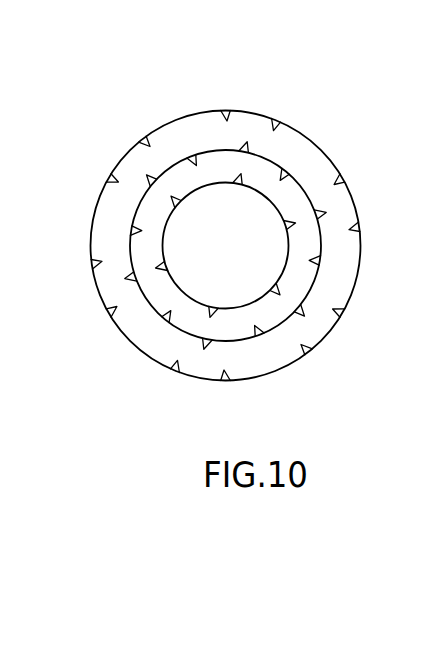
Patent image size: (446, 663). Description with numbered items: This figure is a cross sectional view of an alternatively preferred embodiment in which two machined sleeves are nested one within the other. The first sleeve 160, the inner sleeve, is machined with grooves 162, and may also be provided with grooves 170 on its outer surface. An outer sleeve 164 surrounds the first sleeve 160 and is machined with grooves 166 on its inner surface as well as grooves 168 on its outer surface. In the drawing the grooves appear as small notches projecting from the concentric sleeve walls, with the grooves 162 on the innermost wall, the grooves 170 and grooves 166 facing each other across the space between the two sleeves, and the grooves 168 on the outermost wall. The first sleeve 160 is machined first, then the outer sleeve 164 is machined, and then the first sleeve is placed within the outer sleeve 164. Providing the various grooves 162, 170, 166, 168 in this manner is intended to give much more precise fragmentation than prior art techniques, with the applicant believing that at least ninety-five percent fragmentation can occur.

The first sleeve 160 is at (292, 200).
The grooves 162 is at (278, 290).
The outer sleeve 164 is at (150, 338).
The grooves 166 is at (243, 145).
The grooves 168 is at (147, 140).
The grooves 170 is at (135, 229).